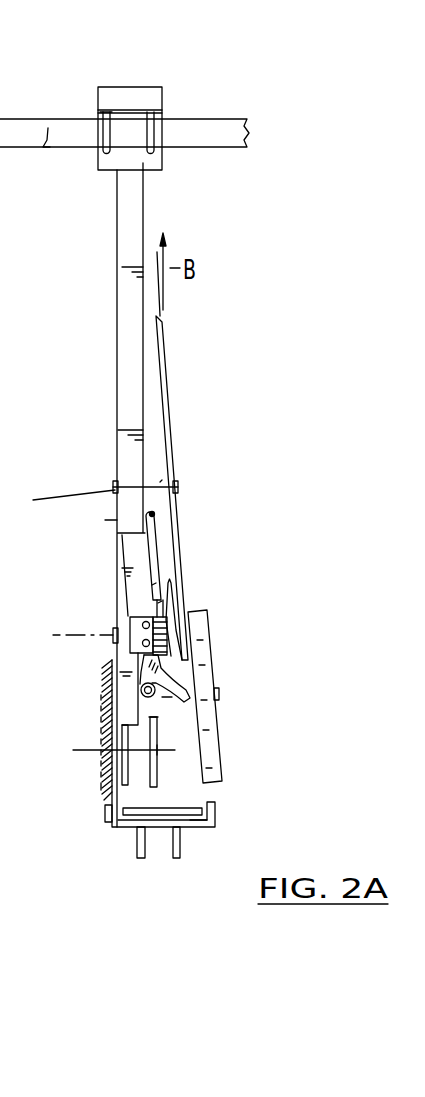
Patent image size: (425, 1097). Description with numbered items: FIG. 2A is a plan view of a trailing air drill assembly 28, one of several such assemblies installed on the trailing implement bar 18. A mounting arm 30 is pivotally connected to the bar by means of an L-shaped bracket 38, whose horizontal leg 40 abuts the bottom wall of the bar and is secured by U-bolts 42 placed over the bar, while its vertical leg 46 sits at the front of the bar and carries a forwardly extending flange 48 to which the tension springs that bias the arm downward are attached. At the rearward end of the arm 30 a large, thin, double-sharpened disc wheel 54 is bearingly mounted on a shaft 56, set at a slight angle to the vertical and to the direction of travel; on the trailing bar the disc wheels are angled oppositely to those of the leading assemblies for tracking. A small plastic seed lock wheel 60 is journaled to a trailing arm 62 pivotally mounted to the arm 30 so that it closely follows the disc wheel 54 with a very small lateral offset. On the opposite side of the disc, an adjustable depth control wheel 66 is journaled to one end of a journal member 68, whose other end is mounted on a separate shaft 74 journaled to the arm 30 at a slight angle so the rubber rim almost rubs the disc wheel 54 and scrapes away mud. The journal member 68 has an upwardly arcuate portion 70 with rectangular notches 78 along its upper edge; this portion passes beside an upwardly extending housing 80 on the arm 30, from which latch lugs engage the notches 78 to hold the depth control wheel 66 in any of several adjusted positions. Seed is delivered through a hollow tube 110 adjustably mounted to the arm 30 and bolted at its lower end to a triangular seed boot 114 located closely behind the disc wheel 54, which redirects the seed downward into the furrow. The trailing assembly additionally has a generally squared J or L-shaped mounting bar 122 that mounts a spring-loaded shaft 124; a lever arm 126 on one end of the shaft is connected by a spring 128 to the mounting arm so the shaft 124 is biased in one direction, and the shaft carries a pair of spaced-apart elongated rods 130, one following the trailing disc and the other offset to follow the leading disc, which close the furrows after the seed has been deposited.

The trailing implement bar 18 is at (256, 109).
The air drill assembly 28 is at (208, 474).
The mounting arm 30 is at (142, 215).
The L-shaped bracket 38 is at (163, 97).
The horizontal leg 40 is at (151, 163).
The U-bolts 42 is at (106, 132).
The vertical leg 46 is at (103, 112).
The flange 48 is at (128, 92).
The disc wheel 54 is at (168, 325).
The shaft 56 is at (160, 482).
The seed lock wheel 60 is at (165, 786).
The trailing arm 62 is at (123, 764).
The depth control wheel 66 is at (219, 718).
The journal member 68 is at (188, 667).
The arcuate portion 70 is at (164, 530).
The shaft 74 is at (147, 511).
The notches 78 is at (160, 603).
The housing 80 is at (132, 613).
The hollow tube 110 is at (140, 700).
The seed boot 114 is at (169, 602).
The mounting bar 122 is at (217, 813).
The spring-loaded shaft 124 is at (193, 823).
The lever arm 126 is at (107, 828).
The spring 128 is at (110, 788).
The elongated rods 130 is at (173, 852).